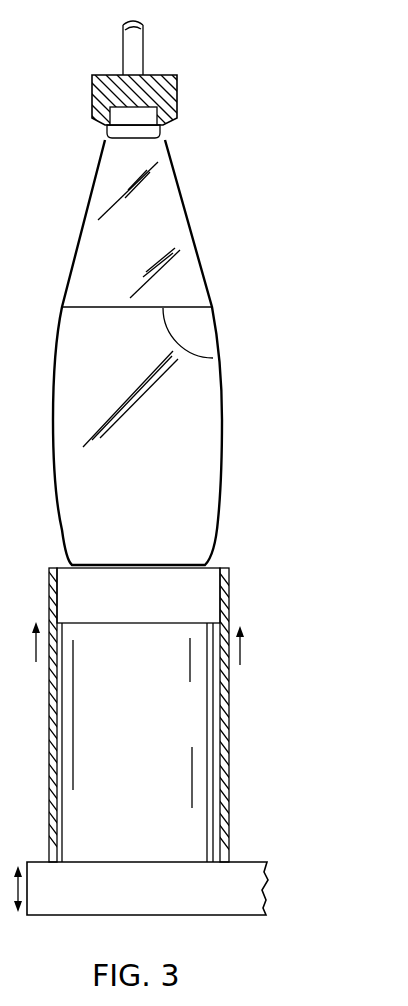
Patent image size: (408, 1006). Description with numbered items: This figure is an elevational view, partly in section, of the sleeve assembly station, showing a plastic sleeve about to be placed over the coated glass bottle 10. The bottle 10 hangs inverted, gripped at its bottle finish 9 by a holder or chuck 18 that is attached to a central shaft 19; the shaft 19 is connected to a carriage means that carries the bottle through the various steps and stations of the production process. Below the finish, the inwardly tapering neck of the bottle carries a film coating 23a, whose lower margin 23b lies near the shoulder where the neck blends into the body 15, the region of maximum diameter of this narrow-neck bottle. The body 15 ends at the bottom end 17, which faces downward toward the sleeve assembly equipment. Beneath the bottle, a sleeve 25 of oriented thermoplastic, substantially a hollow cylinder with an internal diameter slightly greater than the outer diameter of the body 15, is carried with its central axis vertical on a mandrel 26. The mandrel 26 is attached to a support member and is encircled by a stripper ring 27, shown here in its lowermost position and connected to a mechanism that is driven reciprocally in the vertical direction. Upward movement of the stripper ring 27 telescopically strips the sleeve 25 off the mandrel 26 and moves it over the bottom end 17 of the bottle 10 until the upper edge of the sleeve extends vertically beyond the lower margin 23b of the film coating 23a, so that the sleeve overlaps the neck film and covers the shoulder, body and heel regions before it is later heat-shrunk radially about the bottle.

The bottle finish 9 is at (133, 128).
The glass bottle 10 is at (147, 463).
The body 15 is at (222, 477).
The bottom end 17 is at (135, 570).
The holder or chuck 18 is at (184, 108).
The central shaft 19 is at (137, 47).
The neck film coating 23a is at (178, 238).
The lower margin of neck film 23b is at (213, 358).
The sleeve 25 is at (223, 716).
The mandrel 26 is at (152, 749).
The stripper ring 27 is at (242, 880).